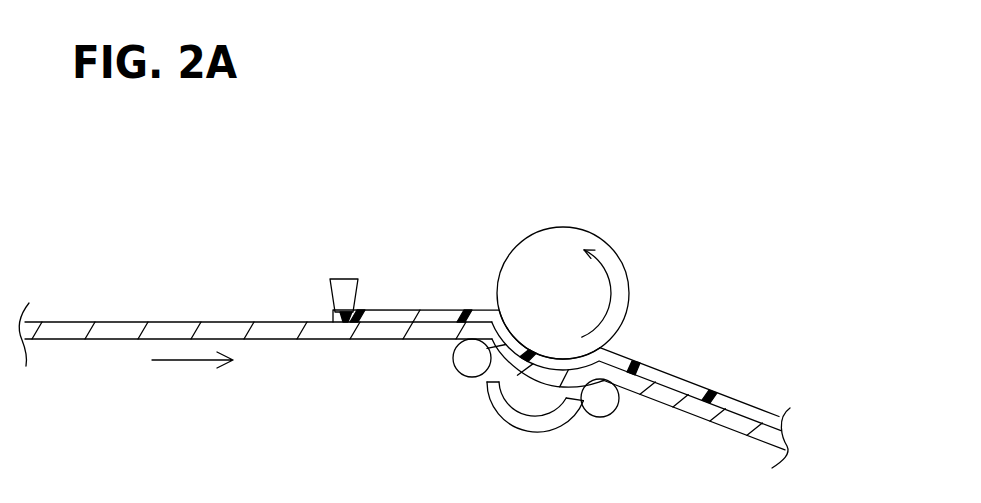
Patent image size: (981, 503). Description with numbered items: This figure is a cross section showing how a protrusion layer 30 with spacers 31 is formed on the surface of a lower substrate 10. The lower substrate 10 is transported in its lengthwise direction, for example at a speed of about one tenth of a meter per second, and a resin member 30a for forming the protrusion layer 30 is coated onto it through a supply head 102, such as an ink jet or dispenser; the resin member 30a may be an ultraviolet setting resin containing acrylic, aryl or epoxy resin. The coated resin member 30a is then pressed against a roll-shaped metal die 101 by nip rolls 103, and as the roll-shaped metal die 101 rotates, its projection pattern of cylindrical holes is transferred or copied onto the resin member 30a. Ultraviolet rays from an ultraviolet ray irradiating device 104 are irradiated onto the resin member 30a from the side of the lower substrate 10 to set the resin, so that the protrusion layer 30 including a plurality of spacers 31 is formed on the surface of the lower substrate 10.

The lower substrate 10 is at (152, 322).
The resin member 30a is at (455, 310).
The protrusion layer 30 is at (644, 381).
The spacers 31 is at (668, 375).
The roll-shaped metal die 101 is at (548, 229).
The supply head 102 is at (332, 281).
The nip rolls 103 is at (468, 376).
The ultraviolet ray irradiating device 104 is at (513, 426).